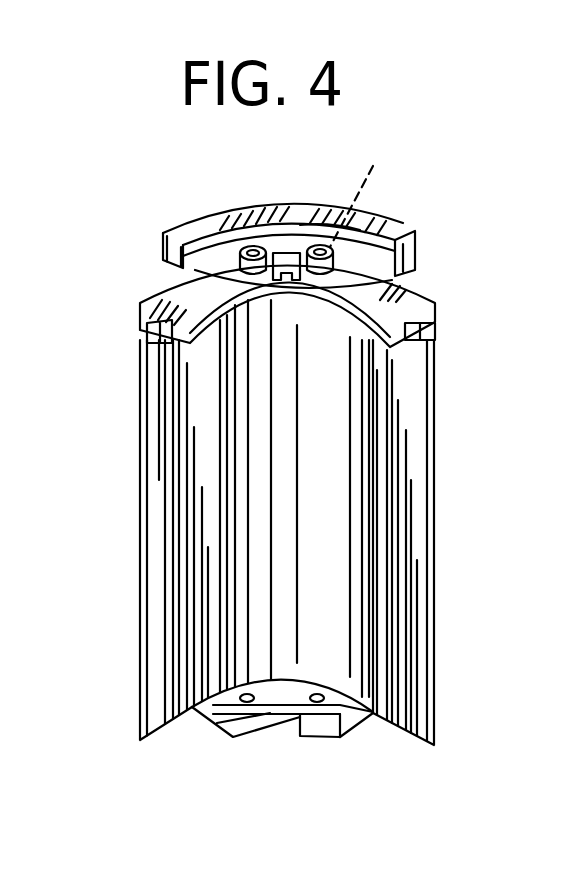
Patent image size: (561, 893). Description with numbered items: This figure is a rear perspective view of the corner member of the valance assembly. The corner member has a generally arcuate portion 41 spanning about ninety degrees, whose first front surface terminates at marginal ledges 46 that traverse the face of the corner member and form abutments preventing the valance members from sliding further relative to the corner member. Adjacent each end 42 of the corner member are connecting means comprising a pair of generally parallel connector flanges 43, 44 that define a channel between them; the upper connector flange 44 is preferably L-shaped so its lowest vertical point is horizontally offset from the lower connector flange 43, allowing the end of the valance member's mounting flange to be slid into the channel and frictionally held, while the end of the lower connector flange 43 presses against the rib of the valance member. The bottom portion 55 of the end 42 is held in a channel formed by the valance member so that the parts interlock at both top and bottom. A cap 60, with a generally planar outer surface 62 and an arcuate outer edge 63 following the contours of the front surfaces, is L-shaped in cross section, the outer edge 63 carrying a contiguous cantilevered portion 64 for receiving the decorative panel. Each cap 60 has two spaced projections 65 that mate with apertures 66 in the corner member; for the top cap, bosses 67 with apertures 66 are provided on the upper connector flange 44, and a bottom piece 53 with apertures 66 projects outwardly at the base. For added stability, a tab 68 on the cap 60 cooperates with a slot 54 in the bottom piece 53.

The arcuate portion 41 is at (310, 458).
The end 42 is at (150, 467).
The lower connector flange 43 is at (147, 332).
The upper connector flange 44 is at (187, 317).
The marginal ledge 46 is at (170, 267).
The bottom piece 53 is at (218, 710).
The slot 54 is at (288, 715).
The bottom portion 55 is at (157, 658).
The cap 60 is at (275, 268).
The outer surface 62 is at (220, 216).
The arcuate outer edge 63 is at (313, 198).
The cantilevered portion 64 is at (163, 258).
The projection 65 is at (369, 197).
The aperture 66 is at (415, 233).
The boss 67 is at (323, 272).
The tab 68 is at (292, 283).